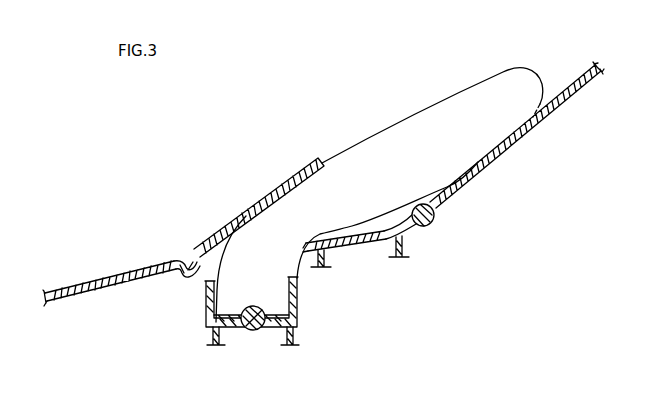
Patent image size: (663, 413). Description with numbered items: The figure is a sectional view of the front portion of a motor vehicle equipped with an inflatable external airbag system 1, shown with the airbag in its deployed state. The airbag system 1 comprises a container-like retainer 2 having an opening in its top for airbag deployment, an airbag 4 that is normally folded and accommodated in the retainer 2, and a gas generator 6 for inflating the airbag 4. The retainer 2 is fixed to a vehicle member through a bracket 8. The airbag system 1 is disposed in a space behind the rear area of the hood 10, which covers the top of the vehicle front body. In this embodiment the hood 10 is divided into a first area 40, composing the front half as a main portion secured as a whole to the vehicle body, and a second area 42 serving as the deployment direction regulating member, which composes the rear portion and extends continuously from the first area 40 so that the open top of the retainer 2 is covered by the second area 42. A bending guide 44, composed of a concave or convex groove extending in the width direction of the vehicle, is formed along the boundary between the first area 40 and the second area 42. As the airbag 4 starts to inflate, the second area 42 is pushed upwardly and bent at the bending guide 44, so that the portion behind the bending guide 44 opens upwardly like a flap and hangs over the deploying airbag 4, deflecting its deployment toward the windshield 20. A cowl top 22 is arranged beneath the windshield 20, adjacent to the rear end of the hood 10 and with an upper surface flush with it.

The inflatable external airbag system 1 is at (187, 313).
The retainer 2 is at (300, 283).
The airbag 4 is at (420, 108).
The gas generator 6 is at (249, 331).
The bracket 8 is at (213, 343).
The hood 10 is at (124, 245).
The windshield 20 is at (586, 84).
The cowl top 22 is at (380, 243).
The first area 40 is at (70, 287).
The second area 42 is at (288, 180).
The bending guide 44 is at (185, 243).